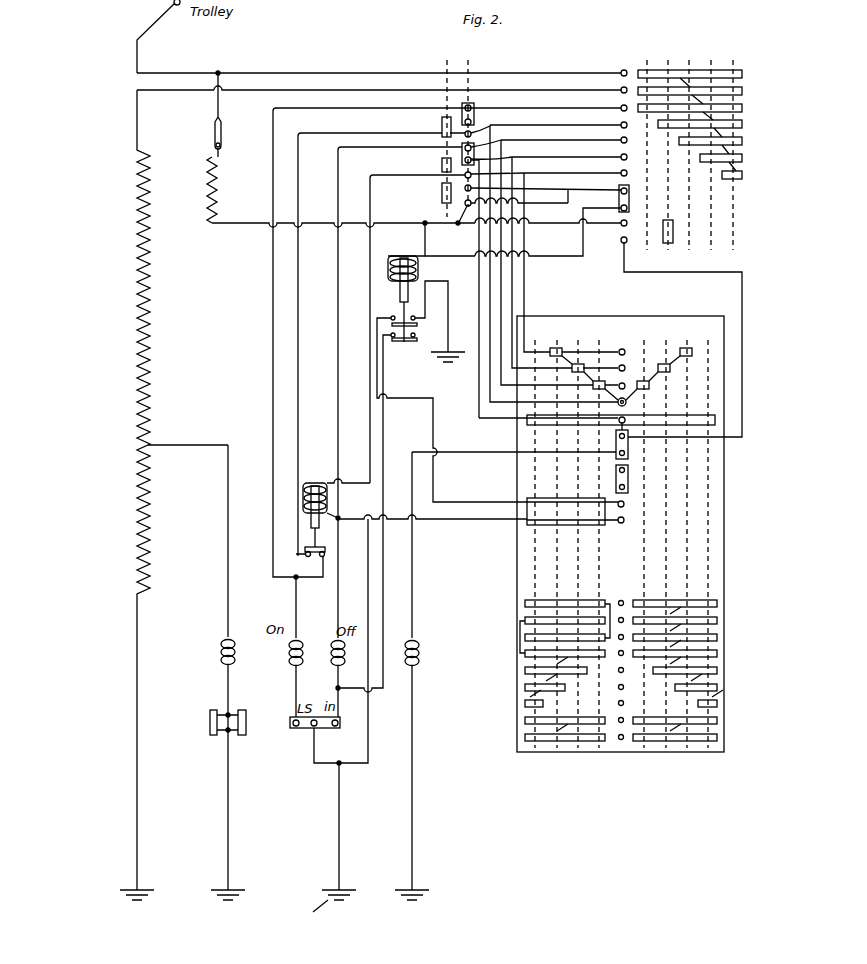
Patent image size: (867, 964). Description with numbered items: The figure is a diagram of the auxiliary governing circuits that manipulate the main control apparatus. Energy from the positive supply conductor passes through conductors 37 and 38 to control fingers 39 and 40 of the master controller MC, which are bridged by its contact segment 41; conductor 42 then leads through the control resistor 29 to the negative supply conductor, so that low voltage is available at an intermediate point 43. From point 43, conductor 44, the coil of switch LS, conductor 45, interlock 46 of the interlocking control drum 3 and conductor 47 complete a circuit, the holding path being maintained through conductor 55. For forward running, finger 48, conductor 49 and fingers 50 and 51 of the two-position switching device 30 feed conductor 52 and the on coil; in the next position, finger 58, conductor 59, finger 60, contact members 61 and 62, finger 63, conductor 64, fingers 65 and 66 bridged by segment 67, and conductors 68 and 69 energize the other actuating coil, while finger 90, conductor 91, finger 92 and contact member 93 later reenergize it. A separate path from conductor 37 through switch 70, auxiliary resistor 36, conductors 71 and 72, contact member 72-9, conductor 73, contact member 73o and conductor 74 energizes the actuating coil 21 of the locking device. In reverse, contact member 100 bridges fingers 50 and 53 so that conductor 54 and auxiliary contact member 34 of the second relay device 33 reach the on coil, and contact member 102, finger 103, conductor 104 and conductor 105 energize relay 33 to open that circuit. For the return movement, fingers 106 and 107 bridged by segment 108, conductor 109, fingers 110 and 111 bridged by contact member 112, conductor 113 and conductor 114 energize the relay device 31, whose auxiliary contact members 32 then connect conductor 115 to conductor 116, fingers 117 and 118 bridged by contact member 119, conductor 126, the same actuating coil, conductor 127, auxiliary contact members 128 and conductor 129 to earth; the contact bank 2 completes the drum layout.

The controller resistor bank 2 is at (631, 670).
The interlocking control drum 3 is at (635, 534).
The actuating coil 21 is at (418, 676).
The control resistor 29 is at (150, 365).
The two-position switching device 30 is at (446, 131).
The relay device 31 is at (401, 299).
The auxiliary contact members 32 is at (390, 316).
The second relay device 33 is at (336, 510).
The auxiliary contact member 34 is at (305, 596).
The auxiliary resistor 36 is at (216, 192).
The conductor 37 is at (172, 68).
The conductor 38 is at (302, 73).
The control finger 39 is at (622, 70).
The control finger 40 is at (619, 89).
The contact segment 41 is at (747, 76).
The conductor 42 is at (579, 91).
The intermediate low-voltage point 43 is at (152, 440).
The conductor 44 is at (210, 446).
The conductor 45 is at (230, 692).
The contact member (interlock) 46 is at (615, 481).
The conductor 47 is at (230, 790).
The control finger 48 is at (620, 107).
The conductor 49 is at (577, 107).
The control finger 50 is at (472, 121).
The control finger 51 is at (472, 109).
The conductor 52 is at (350, 107).
The control finger 53 is at (485, 132).
The conductor 54 is at (377, 134).
The conductor 55 is at (336, 800).
The control finger 58 is at (569, 260).
The conductor 59 is at (596, 125).
The control finger 60 is at (627, 404).
The contact member (segment) 61 is at (627, 401).
The contact member 62 is at (690, 420).
The control finger 63 is at (617, 424).
The conductor 64 is at (500, 429).
The control finger 65 is at (505, 160).
The control finger 66 is at (461, 150).
The contact segment 67 is at (503, 146).
The conductor 68 is at (384, 148).
The conductor 69 is at (338, 437).
The switch 70 is at (221, 135).
The conductor 71 is at (310, 222).
The conductor 72 is at (548, 229).
The contact member 72-q 72-9 is at (665, 244).
The conductor 73 is at (728, 272).
The contact member 73o is at (628, 440).
The conductor 74 is at (496, 457).
The control finger 90 is at (634, 141).
The conductor 91 is at (610, 142).
The control finger 92 is at (625, 354).
The contact member 93 is at (650, 385).
The contact member 100 is at (442, 124).
The contact member 102 is at (442, 167).
The control finger 103 is at (546, 260).
The conductor 104 is at (405, 175).
The conductor 105 is at (368, 610).
The control finger 106 is at (543, 188).
The control finger 107 is at (466, 226).
The contact segment 108 is at (442, 195).
The conductor 109 is at (562, 204).
The control finger 110 is at (619, 187).
The control finger 111 is at (619, 206).
The contact member 112 is at (629, 199).
The conductor 113 is at (565, 258).
The conductor 114 is at (448, 312).
The conductor 115 is at (423, 239).
The conductor 116 is at (377, 338).
The control finger 117 is at (624, 504).
The control finger 118 is at (622, 523).
The contact member 119 is at (566, 545).
The conductor 126 is at (479, 528).
The conductor 127 is at (383, 616).
The auxiliary contact members 128 is at (405, 343).
The conductor 129 is at (441, 338).